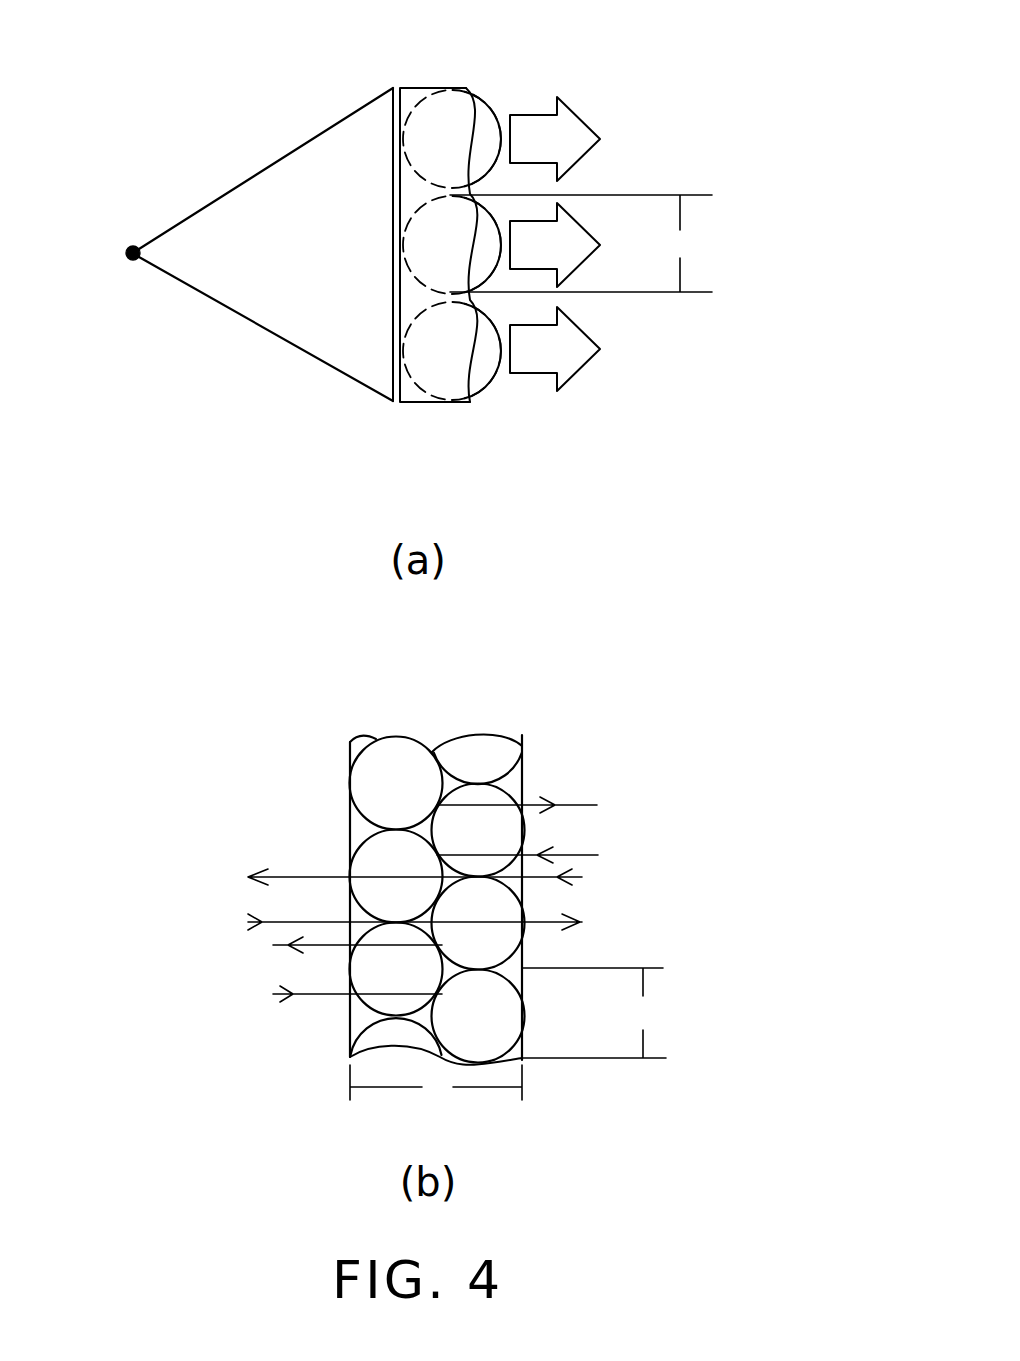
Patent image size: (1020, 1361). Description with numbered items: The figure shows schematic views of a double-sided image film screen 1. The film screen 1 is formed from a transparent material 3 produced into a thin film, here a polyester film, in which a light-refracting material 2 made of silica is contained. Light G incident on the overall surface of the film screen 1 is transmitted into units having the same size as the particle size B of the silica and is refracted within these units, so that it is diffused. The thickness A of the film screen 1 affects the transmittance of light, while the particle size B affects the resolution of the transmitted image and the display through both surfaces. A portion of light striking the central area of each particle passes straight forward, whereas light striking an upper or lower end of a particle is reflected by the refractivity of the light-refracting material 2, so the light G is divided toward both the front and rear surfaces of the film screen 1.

The film screen 1 is at (409, 97).
The light-refracting material 2 is at (427, 136).
The transparent material 3 is at (427, 196).
The light G is at (378, 551).
The thickness A is at (436, 1087).
The particle size B is at (581, 626).